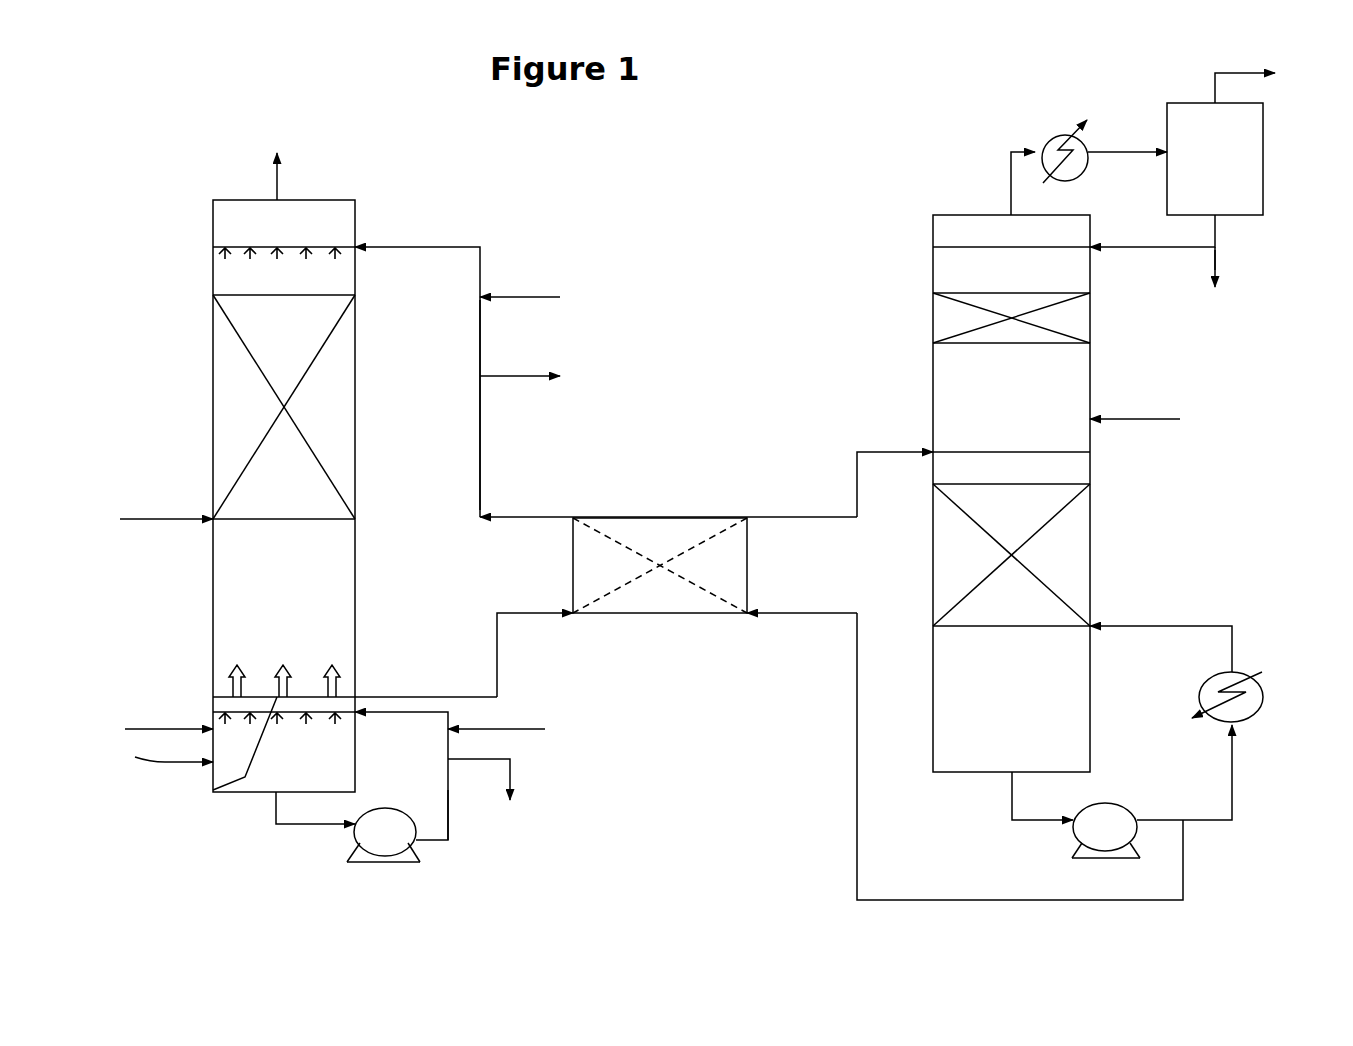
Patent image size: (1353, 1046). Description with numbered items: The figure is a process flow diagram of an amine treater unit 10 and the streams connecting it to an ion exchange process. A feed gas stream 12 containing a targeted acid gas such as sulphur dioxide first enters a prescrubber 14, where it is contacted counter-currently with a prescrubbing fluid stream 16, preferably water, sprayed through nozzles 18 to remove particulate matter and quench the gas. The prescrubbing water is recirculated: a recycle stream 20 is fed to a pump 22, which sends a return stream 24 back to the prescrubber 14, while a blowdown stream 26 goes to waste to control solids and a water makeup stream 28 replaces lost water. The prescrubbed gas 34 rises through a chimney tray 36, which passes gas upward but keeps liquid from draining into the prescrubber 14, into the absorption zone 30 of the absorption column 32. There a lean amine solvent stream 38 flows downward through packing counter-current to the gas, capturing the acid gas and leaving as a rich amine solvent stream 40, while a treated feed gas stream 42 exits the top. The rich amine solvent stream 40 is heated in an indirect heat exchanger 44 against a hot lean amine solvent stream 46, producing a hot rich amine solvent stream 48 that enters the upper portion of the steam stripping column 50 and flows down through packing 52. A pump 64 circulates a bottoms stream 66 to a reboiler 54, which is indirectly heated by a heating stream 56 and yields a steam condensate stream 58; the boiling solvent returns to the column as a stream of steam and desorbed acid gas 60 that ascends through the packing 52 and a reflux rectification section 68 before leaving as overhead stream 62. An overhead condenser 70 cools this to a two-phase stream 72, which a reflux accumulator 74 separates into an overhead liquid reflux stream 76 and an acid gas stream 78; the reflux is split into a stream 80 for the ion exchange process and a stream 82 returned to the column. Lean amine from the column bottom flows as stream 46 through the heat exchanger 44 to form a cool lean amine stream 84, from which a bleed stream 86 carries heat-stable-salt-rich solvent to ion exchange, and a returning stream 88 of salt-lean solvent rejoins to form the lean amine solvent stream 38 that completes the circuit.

The amine treater unit 10 is at (700, 215).
The feed gas stream 12 is at (156, 729).
The prescrubber 14 is at (164, 749).
The prescrubbing fluid stream 16 is at (401, 776).
The nozzles 18 is at (213, 712).
The recycle stream 20 is at (276, 810).
The pump 22 is at (383, 820).
The return stream 24 is at (448, 823).
The blowdown stream 26 is at (494, 778).
The water makeup stream 28 is at (496, 711).
The absorption zone 30 is at (230, 407).
The absorption column 32 is at (149, 518).
The prescrubbed gas 34 is at (228, 682).
The chimney tray 36 is at (213, 790).
The lean amine solvent stream 38 is at (346, 371).
The rich amine solvent stream 40 is at (393, 655).
The treated feed gas stream 42 is at (296, 176).
The indirect heat exchanger 44 is at (660, 577).
The hot lean amine solvent stream 46 is at (965, 756).
The hot rich amine solvent stream 48 is at (706, 472).
The steam stripping column 50 is at (1148, 417).
The packing 52 is at (1042, 561).
The reboiler 54 is at (1265, 722).
The heating stream 56 is at (1184, 772).
The steam condensate stream 58 is at (1243, 693).
The steam and desorbed acid gas stream 60 is at (1161, 640).
The overhead stream 62 is at (1009, 183).
The pump 64 is at (1106, 815).
The bottoms stream 66 is at (1042, 796).
The reflux rectification section 68 is at (1073, 325).
The overhead condenser 70 is at (1053, 138).
The two-phase stream 72 is at (1127, 137).
The reflux accumulator 74 is at (1215, 159).
The overhead liquid reflux stream 76 is at (1242, 257).
The acid gas stream 78 is at (1268, 82).
The reflux split stream 80 is at (1219, 282).
The reflux return stream 82 is at (1152, 231).
The cool lean amine stream 84 is at (499, 405).
The heat stable salt rich amine bleed stream 86 is at (534, 377).
The heat stable salt lean amine solvent stream 88 is at (534, 297).